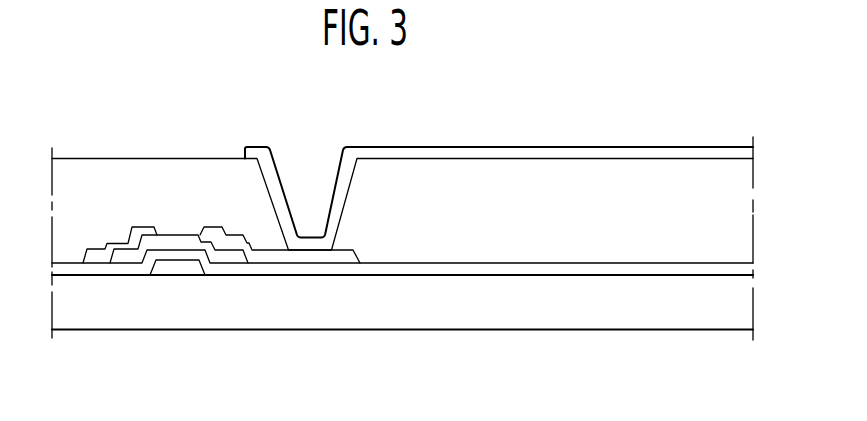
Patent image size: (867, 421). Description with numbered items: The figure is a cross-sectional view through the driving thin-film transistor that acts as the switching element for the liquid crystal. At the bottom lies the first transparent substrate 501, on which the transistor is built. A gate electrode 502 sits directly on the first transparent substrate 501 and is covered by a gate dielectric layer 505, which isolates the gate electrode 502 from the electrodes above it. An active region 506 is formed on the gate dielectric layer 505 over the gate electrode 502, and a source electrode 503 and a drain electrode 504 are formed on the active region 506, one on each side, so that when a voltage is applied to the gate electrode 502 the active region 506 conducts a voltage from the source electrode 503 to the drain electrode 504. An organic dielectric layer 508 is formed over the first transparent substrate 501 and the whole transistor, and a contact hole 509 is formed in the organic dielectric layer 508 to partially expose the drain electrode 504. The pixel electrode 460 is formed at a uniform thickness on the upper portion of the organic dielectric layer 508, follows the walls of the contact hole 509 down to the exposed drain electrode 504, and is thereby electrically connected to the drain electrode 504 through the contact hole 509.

The first transparent substrate 501 is at (698, 297).
The gate electrode 502 is at (177, 265).
The source electrode 503 is at (91, 253).
The drain electrode 504 is at (278, 255).
The gate dielectric layer 505 is at (452, 265).
The active region 506 is at (129, 253).
The organic dielectric layer 508 is at (617, 237).
The contact hole 509 is at (317, 162).
The pixel electrode 460 is at (575, 155).